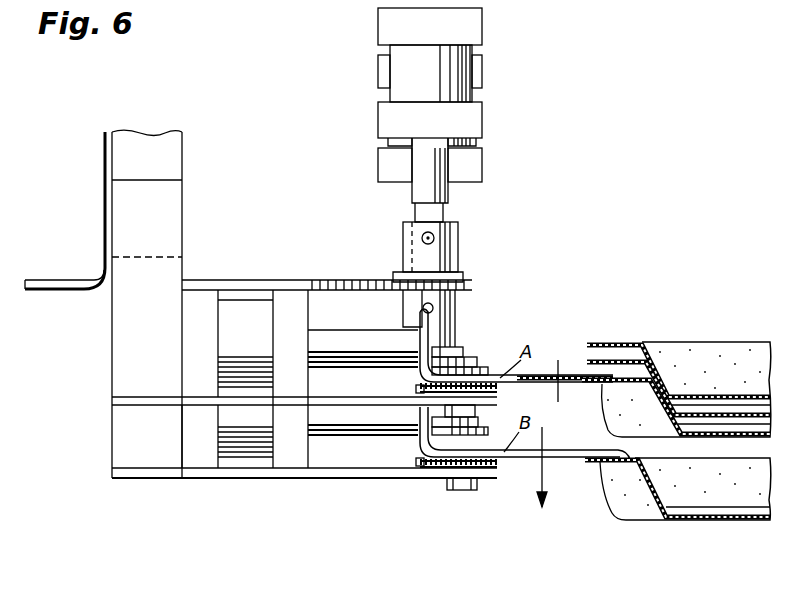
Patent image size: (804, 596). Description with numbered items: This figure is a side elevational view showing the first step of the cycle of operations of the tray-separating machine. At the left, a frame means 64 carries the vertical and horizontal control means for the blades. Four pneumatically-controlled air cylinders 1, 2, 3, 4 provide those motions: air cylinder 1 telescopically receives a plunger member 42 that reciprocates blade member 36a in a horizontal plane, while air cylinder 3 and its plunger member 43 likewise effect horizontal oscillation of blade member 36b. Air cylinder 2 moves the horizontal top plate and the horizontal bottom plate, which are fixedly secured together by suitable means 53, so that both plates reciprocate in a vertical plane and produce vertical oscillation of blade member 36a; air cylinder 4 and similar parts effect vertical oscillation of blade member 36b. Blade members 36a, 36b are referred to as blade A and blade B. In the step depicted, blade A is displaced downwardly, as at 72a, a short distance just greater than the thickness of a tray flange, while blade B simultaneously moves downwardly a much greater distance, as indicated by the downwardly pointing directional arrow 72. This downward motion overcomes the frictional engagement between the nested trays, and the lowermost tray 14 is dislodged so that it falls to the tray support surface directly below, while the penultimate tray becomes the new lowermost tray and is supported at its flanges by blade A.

The air cylinder 1 is at (288, 292).
The air cylinder 2 is at (478, 36).
The air cylinder 3 is at (284, 470).
The air cylinder 4 is at (478, 167).
The lowermost tray 14 is at (679, 338).
The blade member 36a is at (540, 377).
The blade member 36b is at (557, 462).
The plunger member 42 is at (357, 337).
The plunger member 43 is at (362, 438).
The securing means 53 is at (118, 355).
The frame means 64 is at (104, 216).
The directional arrow 72 is at (540, 481).
The downward displacement 72a is at (558, 388).